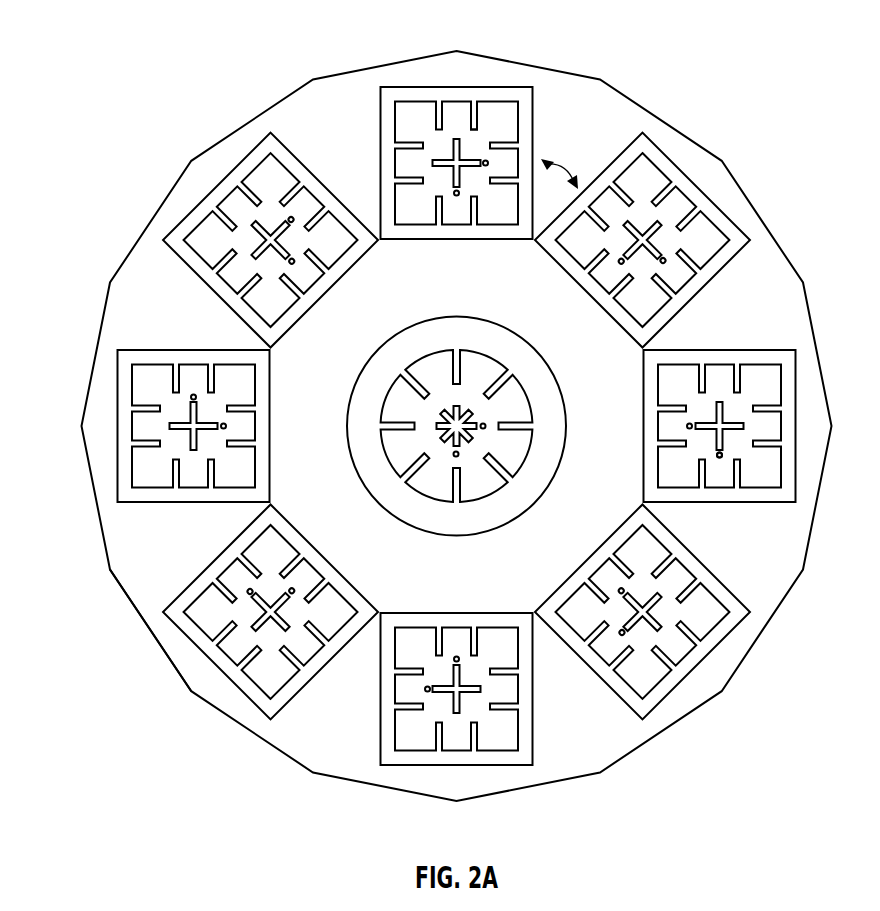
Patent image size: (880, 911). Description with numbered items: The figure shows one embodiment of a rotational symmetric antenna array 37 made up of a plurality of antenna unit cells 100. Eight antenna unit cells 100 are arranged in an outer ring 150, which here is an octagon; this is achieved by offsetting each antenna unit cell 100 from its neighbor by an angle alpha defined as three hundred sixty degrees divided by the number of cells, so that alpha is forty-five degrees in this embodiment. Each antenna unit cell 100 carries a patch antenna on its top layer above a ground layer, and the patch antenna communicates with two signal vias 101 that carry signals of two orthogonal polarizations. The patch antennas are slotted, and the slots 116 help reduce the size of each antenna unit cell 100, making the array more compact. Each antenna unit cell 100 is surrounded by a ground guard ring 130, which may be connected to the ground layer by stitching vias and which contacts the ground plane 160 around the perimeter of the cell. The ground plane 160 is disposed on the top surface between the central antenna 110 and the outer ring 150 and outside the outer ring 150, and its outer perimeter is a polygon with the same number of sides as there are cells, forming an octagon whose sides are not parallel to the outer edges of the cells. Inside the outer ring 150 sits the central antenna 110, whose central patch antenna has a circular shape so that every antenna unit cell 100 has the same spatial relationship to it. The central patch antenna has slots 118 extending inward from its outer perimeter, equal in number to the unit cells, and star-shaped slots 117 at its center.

The antenna array 37 is at (74, 200).
The antenna unit cell 100 is at (117, 412).
The signal via 101 is at (721, 458).
The central antenna 110 is at (487, 497).
The slot 116 is at (476, 121).
The star-shaped slot 117 is at (470, 436).
The slot 118 is at (460, 368).
The ground guard ring 130 is at (419, 613).
The outer ring 150 is at (175, 545).
The ground plane 160 is at (164, 633).